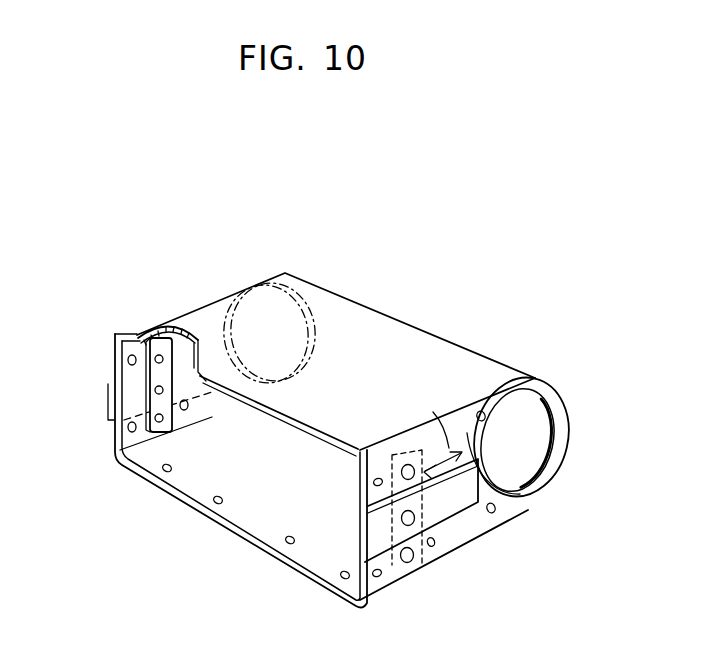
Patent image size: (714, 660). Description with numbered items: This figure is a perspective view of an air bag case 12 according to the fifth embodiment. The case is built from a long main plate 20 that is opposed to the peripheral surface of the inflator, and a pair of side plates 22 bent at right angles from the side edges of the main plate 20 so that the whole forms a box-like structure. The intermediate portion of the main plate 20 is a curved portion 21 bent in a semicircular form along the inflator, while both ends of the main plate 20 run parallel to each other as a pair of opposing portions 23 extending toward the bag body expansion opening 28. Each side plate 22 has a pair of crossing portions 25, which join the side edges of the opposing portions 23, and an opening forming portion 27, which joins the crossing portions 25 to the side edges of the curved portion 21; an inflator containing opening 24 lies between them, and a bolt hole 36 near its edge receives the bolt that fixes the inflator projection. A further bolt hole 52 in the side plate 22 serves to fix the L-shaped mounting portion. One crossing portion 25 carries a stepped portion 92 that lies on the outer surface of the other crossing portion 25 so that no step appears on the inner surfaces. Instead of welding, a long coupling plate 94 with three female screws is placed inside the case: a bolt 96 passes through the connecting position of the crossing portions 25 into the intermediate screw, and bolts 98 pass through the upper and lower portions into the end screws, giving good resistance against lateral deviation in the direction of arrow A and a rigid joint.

The air bag case 12 is at (352, 295).
The main plate 20 is at (335, 441).
The curved portion 21 is at (437, 335).
The side plates 22 is at (110, 452).
The opposing portions 23 is at (368, 345).
The inflator containing opening 24 is at (517, 447).
The crossing portions 25 is at (210, 388).
The opening forming portion 27 is at (566, 428).
The bag body expansion opening 28 is at (253, 523).
The bolt hole 36 is at (481, 412).
The bolt hole 52 is at (433, 546).
The stepped portion 92 is at (108, 397).
The coupling plate 94 is at (172, 428).
The bolt 96 is at (115, 418).
The bolts 98 is at (213, 355).